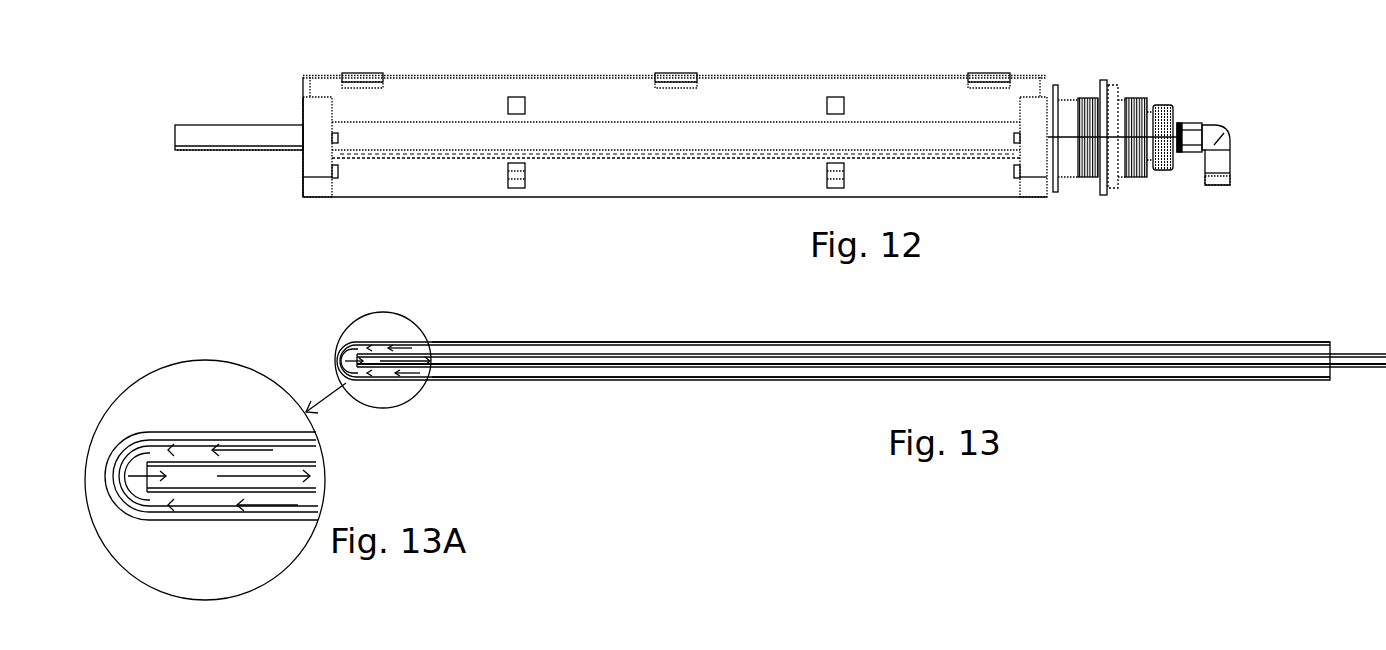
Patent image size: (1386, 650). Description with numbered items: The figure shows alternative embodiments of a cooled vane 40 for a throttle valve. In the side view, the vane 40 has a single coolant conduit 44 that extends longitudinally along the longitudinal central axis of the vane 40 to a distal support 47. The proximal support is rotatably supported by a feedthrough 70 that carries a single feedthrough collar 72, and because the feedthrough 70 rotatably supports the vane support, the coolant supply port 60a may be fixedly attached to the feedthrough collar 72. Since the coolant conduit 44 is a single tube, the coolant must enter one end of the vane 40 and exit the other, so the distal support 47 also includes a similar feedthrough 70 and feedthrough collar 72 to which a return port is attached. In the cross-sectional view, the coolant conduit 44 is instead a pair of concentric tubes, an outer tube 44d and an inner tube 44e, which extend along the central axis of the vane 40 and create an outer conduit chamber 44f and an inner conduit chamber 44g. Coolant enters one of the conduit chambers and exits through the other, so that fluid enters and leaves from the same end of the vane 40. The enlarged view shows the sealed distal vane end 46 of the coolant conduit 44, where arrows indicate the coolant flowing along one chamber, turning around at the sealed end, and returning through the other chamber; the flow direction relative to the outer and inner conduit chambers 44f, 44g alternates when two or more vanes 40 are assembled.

In FIG. 12, the vane 40 is at (386, 75).
In FIG. 12, the coolant conduit 44 is at (478, 140).
In FIG. 13, the coolant conduit 44 is at (372, 343).
In FIG. 12, the distal vane end 46 is at (305, 78).
In FIG. 12, the distal support 47 is at (223, 124).
In FIG. 12, the feedthrough 70 is at (1090, 97).
In FIG. 12, the feedthrough collar 72 is at (1162, 104).
In FIG. 12, the coolant supply port 60a is at (1210, 185).
In FIG. 13, the outer tube 44d is at (443, 342).
In FIG. 13, the inner tube 44e is at (493, 370).
In FIG. 13, the outer conduit chamber 44f is at (605, 350).
In FIG. 13, the inner conduit chamber 44g is at (642, 362).